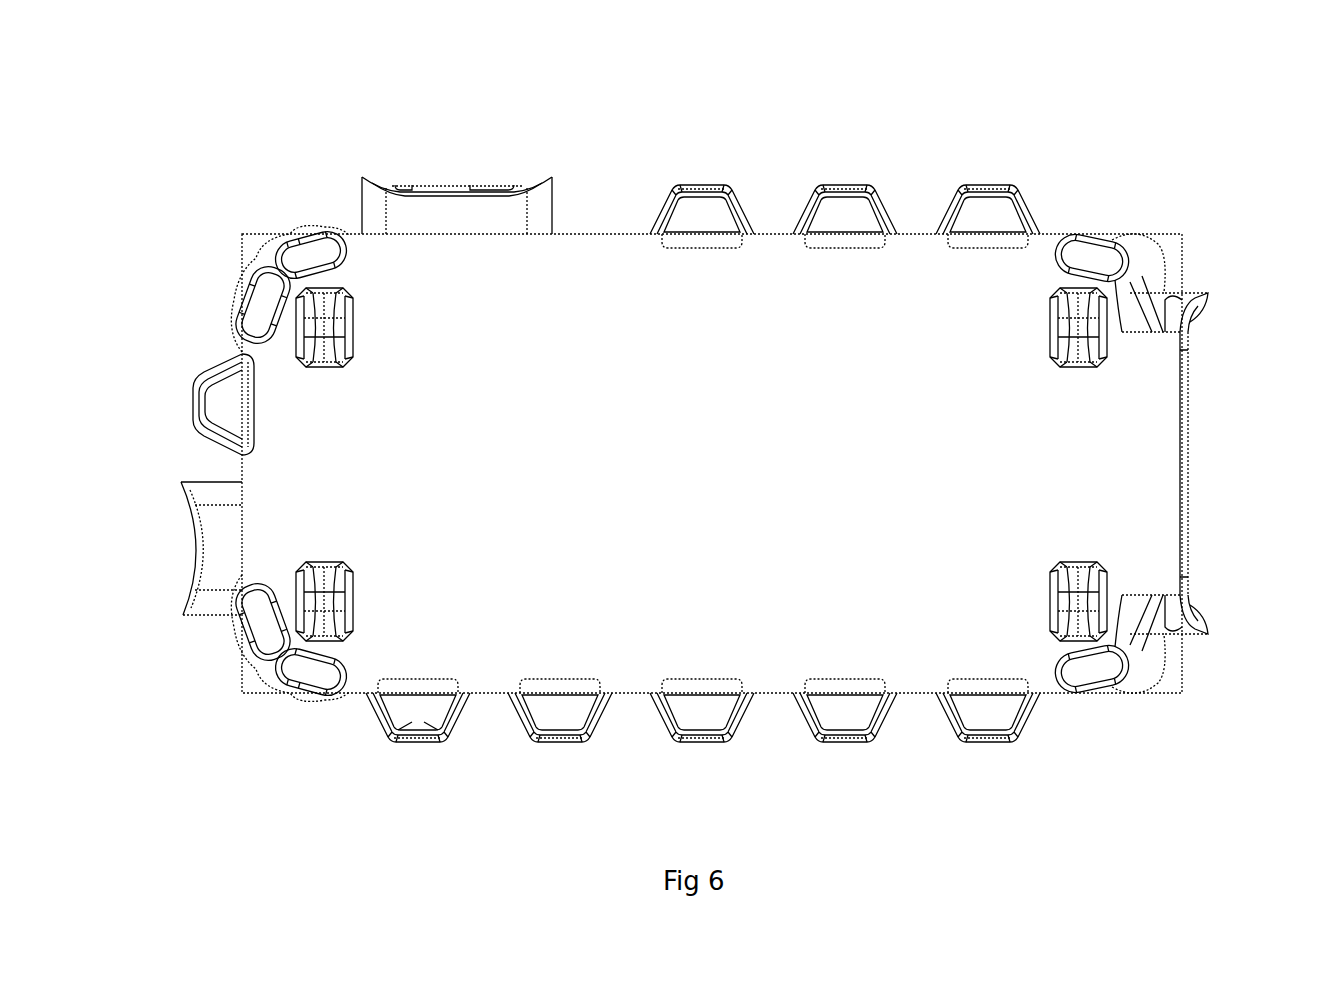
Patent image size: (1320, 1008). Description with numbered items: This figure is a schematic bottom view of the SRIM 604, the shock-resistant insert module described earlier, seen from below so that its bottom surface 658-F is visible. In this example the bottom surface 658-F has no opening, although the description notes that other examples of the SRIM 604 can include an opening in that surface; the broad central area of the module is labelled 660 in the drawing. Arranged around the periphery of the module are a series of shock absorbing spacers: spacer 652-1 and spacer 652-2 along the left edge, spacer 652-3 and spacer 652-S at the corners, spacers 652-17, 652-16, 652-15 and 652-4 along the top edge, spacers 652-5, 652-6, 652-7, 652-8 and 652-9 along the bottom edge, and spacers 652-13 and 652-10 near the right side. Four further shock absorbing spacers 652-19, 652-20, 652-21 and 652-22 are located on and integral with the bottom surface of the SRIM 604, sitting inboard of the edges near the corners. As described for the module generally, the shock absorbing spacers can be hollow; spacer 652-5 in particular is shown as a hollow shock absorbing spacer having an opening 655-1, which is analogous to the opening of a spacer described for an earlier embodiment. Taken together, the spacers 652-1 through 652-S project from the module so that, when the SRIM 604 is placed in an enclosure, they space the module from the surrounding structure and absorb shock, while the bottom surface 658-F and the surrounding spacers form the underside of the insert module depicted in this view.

The SRIM 604 is at (216, 109).
The plate 660 is at (712, 474).
The shock absorbing spacer 652-17 is at (455, 188).
The shock absorbing spacer 652-16 is at (715, 185).
The shock absorbing spacer 652-15 is at (855, 185).
The retention feature 652-4 is at (990, 185).
The shock absorbing spacer 652-5 is at (413, 743).
The shock absorbing spacer 652-6 is at (555, 743).
The shock absorbing spacer 652-7 is at (697, 743).
The shock absorbing spacer 652-8 is at (838, 743).
The shock absorbing spacer 652-9 is at (983, 743).
The opening 655-1 is at (410, 712).
The shock absorbing spacer 652-22 is at (322, 300).
The shock absorbing spacer 652-19 is at (1088, 300).
The shock absorbing spacer 652-21 is at (320, 598).
The shock absorbing spacer 652-20 is at (1082, 602).
The shock absorbing spacer 652-S is at (287, 236).
The shock absorbing spacer 652-3 is at (268, 656).
The shock absorbing spacer 652-13 is at (1103, 240).
The shock absorbing spacer 652-10 is at (1110, 690).
The shock absorbing spacer 652-1 is at (200, 385).
The shock absorbing spacer 652-2 is at (202, 548).
The bottom surface 658-F is at (1160, 447).